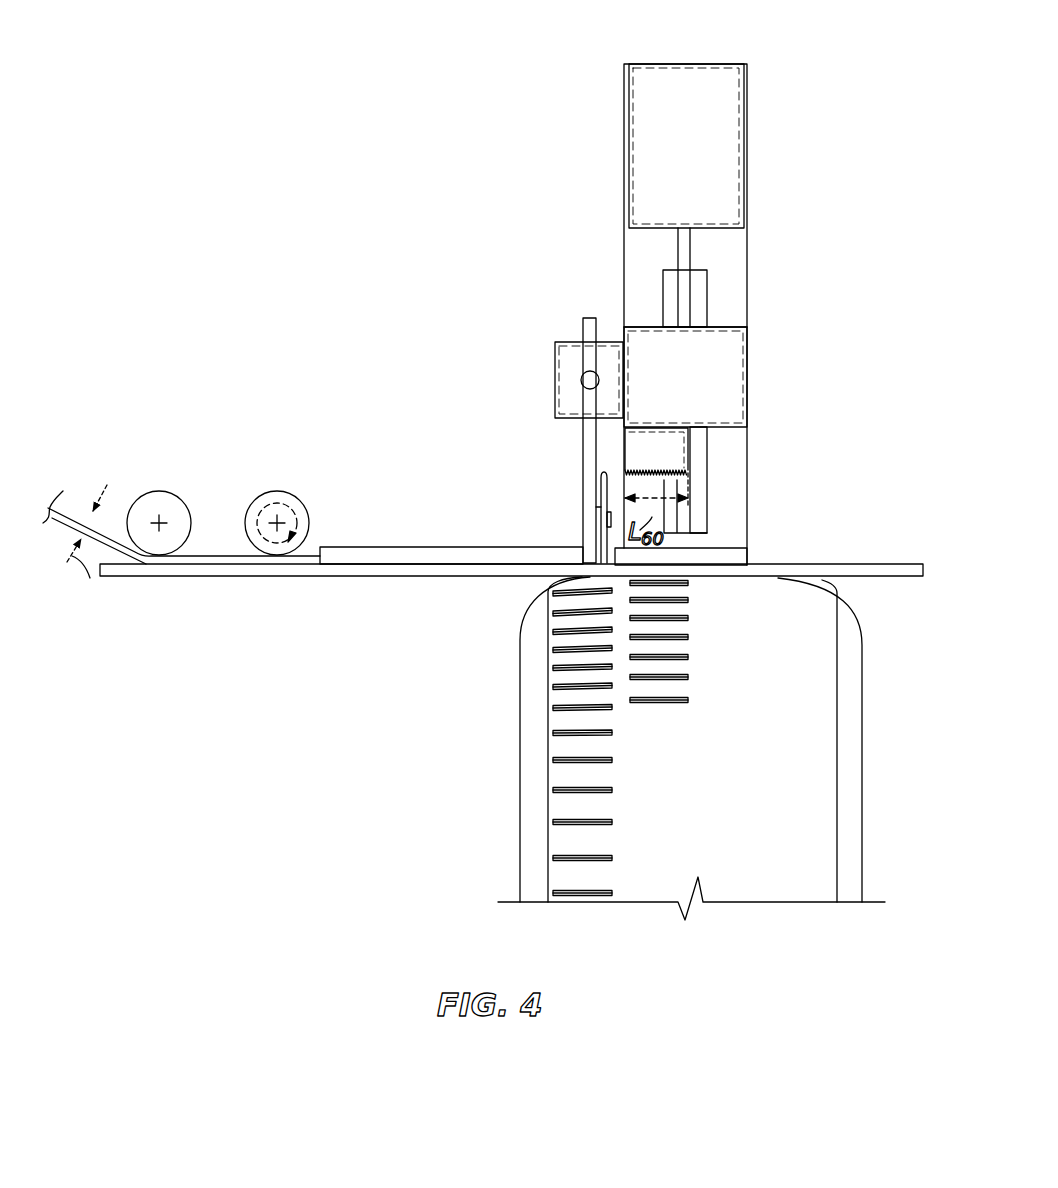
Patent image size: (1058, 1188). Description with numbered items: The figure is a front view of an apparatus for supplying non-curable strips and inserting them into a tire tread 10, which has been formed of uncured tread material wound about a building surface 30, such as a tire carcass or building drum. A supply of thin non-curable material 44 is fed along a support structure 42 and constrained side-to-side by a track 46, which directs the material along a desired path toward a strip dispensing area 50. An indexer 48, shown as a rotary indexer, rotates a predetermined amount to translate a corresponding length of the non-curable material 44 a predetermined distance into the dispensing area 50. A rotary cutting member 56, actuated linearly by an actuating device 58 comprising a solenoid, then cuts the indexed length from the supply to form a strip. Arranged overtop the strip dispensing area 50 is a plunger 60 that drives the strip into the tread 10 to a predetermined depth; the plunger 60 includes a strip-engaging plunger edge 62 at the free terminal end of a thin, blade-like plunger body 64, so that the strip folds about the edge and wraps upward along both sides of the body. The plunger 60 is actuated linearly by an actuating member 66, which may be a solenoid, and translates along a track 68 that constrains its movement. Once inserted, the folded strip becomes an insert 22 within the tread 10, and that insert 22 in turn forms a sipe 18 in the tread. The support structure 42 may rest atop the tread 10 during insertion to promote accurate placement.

The tire tread 10 is at (812, 733).
The sipe 18 is at (638, 706).
The insert 22 is at (675, 706).
The building surface 30 is at (864, 805).
The support structure 42 is at (227, 577).
The non-curable material 44 is at (76, 506).
The track 46 is at (398, 547).
The indexer 48 is at (277, 491).
The strip dispensing area 50 is at (721, 515).
The cutting member 56 is at (602, 493).
The actuating device 58 is at (555, 380).
The plunger 60 is at (758, 302).
The plunger edge 62 is at (638, 476).
The plunger body 64 is at (675, 455).
The actuating member 66 is at (630, 150).
The track 68 is at (663, 300).